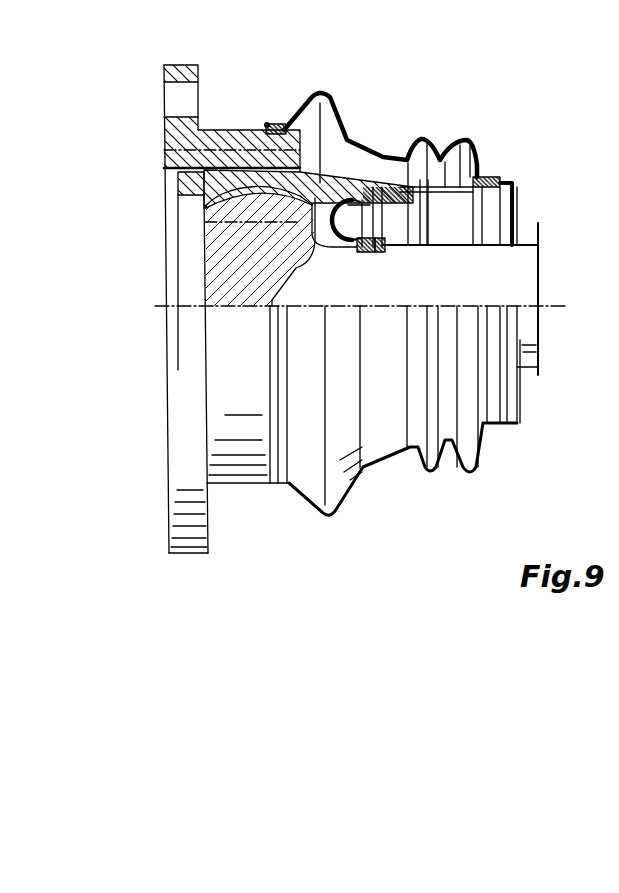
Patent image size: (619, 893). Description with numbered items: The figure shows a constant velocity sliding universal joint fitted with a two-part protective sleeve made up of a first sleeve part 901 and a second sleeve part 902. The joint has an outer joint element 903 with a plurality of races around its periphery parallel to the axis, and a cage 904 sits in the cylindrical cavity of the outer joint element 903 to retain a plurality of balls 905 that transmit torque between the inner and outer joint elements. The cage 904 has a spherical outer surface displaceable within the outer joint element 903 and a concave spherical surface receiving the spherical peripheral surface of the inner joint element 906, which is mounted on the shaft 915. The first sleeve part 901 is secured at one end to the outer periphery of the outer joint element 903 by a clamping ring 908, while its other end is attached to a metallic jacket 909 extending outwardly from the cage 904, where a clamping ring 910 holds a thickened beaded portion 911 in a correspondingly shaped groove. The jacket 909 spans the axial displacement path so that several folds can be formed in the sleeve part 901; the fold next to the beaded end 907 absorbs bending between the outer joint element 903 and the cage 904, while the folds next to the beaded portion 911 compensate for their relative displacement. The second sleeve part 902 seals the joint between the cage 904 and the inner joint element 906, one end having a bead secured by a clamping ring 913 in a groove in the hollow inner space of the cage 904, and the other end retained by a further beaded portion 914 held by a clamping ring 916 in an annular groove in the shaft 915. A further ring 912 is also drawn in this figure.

The first sleeve part 901 is at (521, 492).
The second sleeve part 902 is at (347, 194).
The outer joint element 903 is at (180, 147).
The cage 904 is at (163, 102).
The balls 905 is at (250, 140).
The inner joint element 906 is at (237, 247).
The beaded end 907 is at (262, 122).
The clamping ring 908 is at (275, 122).
The metallic jacket 909 is at (472, 150).
The clamping ring 910 is at (488, 173).
The beaded portion 911 is at (500, 175).
The retaining ring 912 is at (378, 203).
The clamping ring 913 is at (368, 200).
The beaded portion 914 is at (380, 253).
The shaft 915 is at (495, 270).
The clamping ring 916 is at (363, 253).